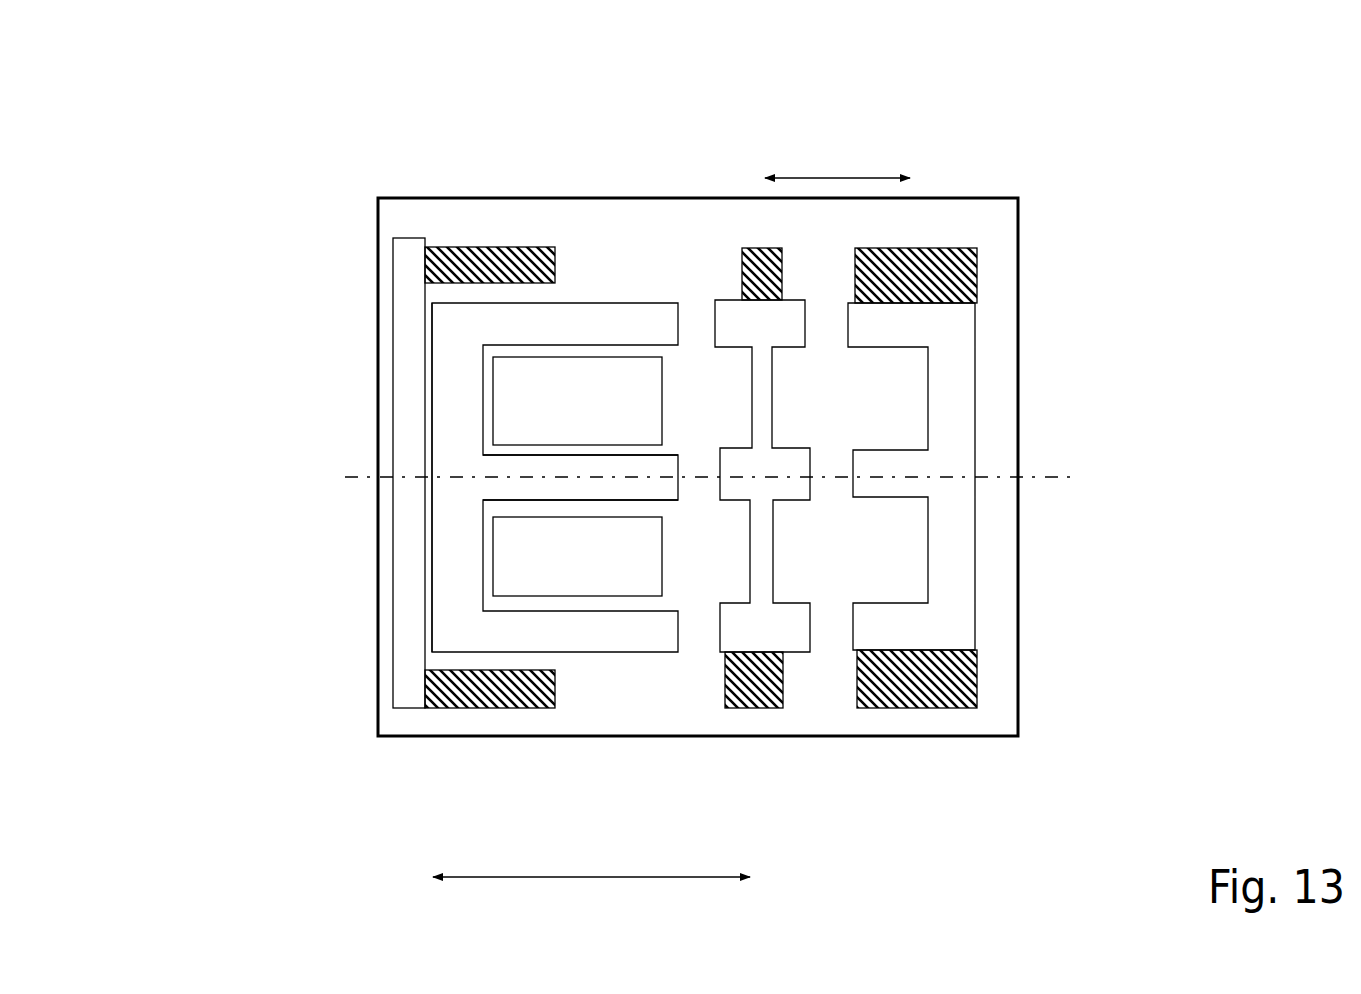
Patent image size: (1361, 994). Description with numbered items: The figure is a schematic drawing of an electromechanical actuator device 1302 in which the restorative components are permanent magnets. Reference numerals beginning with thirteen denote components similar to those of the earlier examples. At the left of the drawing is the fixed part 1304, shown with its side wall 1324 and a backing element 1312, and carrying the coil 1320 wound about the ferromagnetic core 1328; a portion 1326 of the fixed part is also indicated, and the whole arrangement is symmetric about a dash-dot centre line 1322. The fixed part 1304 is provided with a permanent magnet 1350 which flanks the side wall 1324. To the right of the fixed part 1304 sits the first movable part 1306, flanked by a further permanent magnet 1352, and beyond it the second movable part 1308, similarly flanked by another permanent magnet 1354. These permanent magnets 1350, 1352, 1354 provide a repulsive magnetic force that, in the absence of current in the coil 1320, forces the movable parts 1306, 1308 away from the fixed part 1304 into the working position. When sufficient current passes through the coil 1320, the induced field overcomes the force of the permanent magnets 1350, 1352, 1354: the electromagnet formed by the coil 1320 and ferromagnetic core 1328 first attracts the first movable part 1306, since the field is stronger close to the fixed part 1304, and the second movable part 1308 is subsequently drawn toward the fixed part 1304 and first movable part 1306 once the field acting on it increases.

The electromechanical actuator device 1302 is at (172, 160).
The fixed part 1304 is at (434, 473).
The first movable part 1306 is at (740, 491).
The second movable part 1308 is at (1019, 496).
The base plate 1312 is at (408, 597).
The coil 1320 is at (545, 393).
The central axis 1322 is at (751, 473).
The side wall 1324 is at (517, 318).
The core back portion 1326 is at (455, 422).
The ferromagnetic core 1328 is at (663, 488).
The permanent magnet 1350 is at (488, 247).
The further permanent magnet 1352 is at (760, 247).
The another permanent magnet 1354 is at (918, 248).